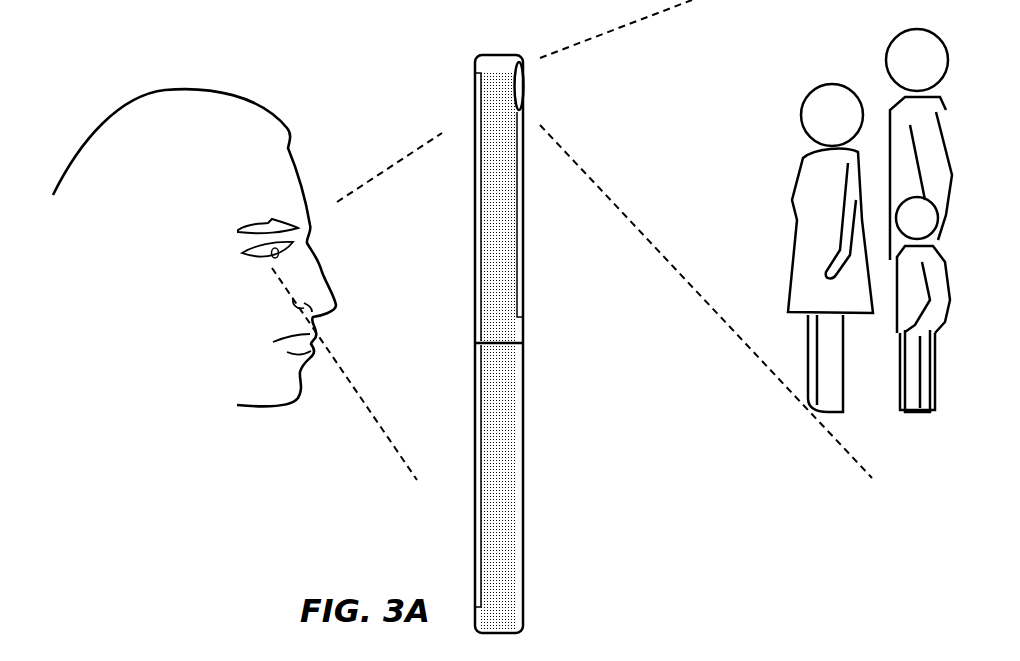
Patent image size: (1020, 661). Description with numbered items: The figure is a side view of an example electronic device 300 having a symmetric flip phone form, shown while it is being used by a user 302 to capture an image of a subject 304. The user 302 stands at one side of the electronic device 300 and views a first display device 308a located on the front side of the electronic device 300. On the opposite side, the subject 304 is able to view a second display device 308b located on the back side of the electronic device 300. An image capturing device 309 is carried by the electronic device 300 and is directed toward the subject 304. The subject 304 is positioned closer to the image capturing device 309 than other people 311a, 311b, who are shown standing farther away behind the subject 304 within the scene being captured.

The electronic device 300 is at (497, 319).
The user 302 is at (233, 113).
The subject 304 is at (808, 382).
The first display device 308a is at (477, 515).
The second display device 308b is at (523, 298).
The image capturing device 309 is at (524, 100).
The other people 311a is at (895, 102).
The other people 311b is at (900, 407).